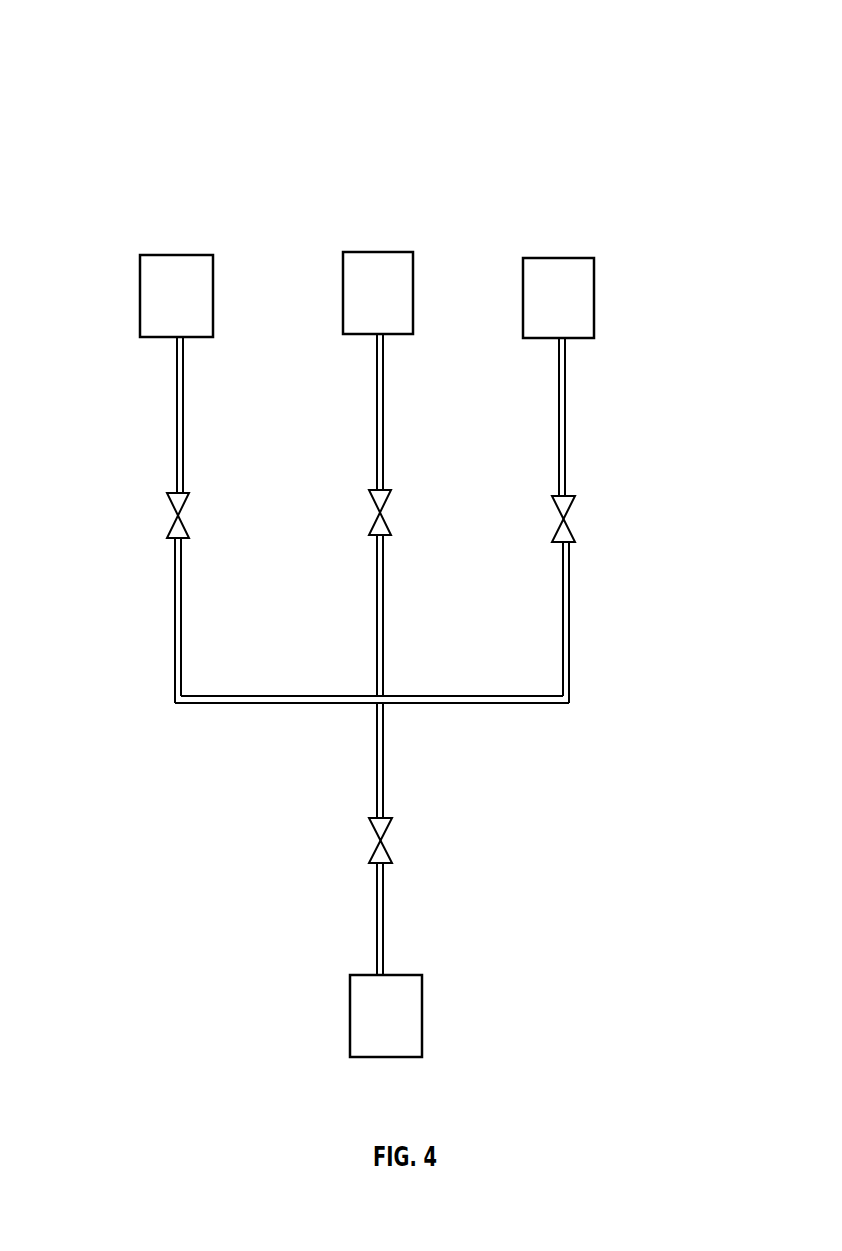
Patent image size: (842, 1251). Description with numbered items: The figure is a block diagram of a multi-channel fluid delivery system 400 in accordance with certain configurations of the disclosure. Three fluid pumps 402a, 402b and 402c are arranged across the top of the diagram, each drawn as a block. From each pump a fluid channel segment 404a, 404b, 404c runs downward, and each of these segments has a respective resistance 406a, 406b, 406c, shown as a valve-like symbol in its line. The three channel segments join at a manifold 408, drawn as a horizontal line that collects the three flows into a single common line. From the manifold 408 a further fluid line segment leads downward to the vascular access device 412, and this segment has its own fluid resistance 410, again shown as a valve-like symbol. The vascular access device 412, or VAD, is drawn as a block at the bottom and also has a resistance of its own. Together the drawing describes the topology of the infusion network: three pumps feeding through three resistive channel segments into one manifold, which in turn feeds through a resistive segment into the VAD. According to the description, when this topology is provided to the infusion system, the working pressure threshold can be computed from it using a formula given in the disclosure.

The fluid supply system 400 is at (155, 50).
The fluid pump 402a is at (163, 256).
The fluid pump 402b is at (370, 251).
The fluid pump 402c is at (563, 250).
The fluid channel segment 404a is at (173, 427).
The fluid channel segment 404b is at (377, 432).
The fluid channel segment 404c is at (558, 435).
The resistance 406a is at (168, 527).
The resistance 406b is at (373, 525).
The resistance 406c is at (558, 527).
The manifold 408 is at (392, 705).
The fluid resistance 410 is at (373, 848).
The vascular access device 412 is at (353, 1017).